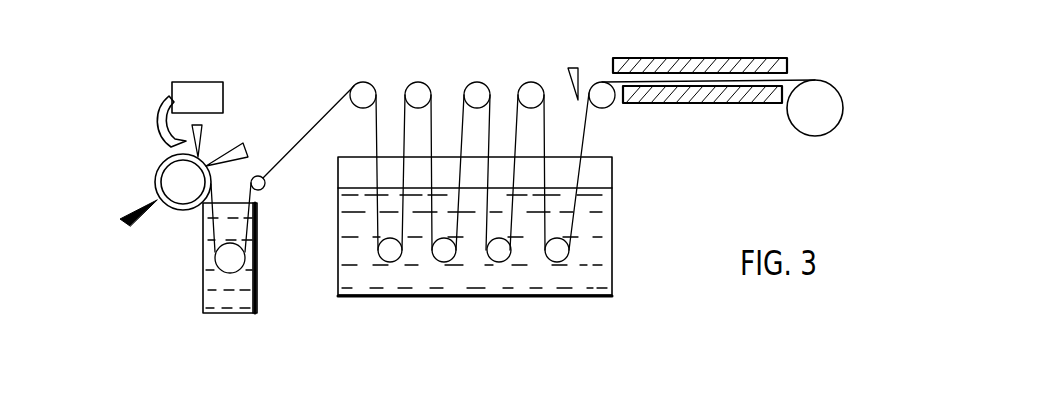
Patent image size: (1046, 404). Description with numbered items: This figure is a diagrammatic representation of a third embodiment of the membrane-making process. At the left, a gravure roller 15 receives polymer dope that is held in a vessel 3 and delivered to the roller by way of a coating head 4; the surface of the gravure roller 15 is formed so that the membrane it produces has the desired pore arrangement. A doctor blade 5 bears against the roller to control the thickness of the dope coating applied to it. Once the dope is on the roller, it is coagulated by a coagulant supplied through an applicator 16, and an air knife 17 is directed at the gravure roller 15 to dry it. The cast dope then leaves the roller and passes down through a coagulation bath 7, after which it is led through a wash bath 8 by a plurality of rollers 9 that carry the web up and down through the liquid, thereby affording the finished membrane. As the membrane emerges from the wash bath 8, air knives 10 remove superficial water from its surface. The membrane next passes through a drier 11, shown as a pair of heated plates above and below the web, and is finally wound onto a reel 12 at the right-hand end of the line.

The vessel 3 is at (193, 90).
The coating head 4 is at (163, 112).
The doctor blade 5 is at (200, 136).
The coagulation bath 7 is at (258, 249).
The wash bath 8 is at (612, 250).
The rollers 9 is at (414, 92).
The air knives 10 is at (572, 78).
The drier 11 is at (692, 55).
The reel 12 is at (805, 112).
The gravure roller 15 is at (170, 165).
The applicator 16 is at (248, 142).
The air knife 17 is at (141, 212).